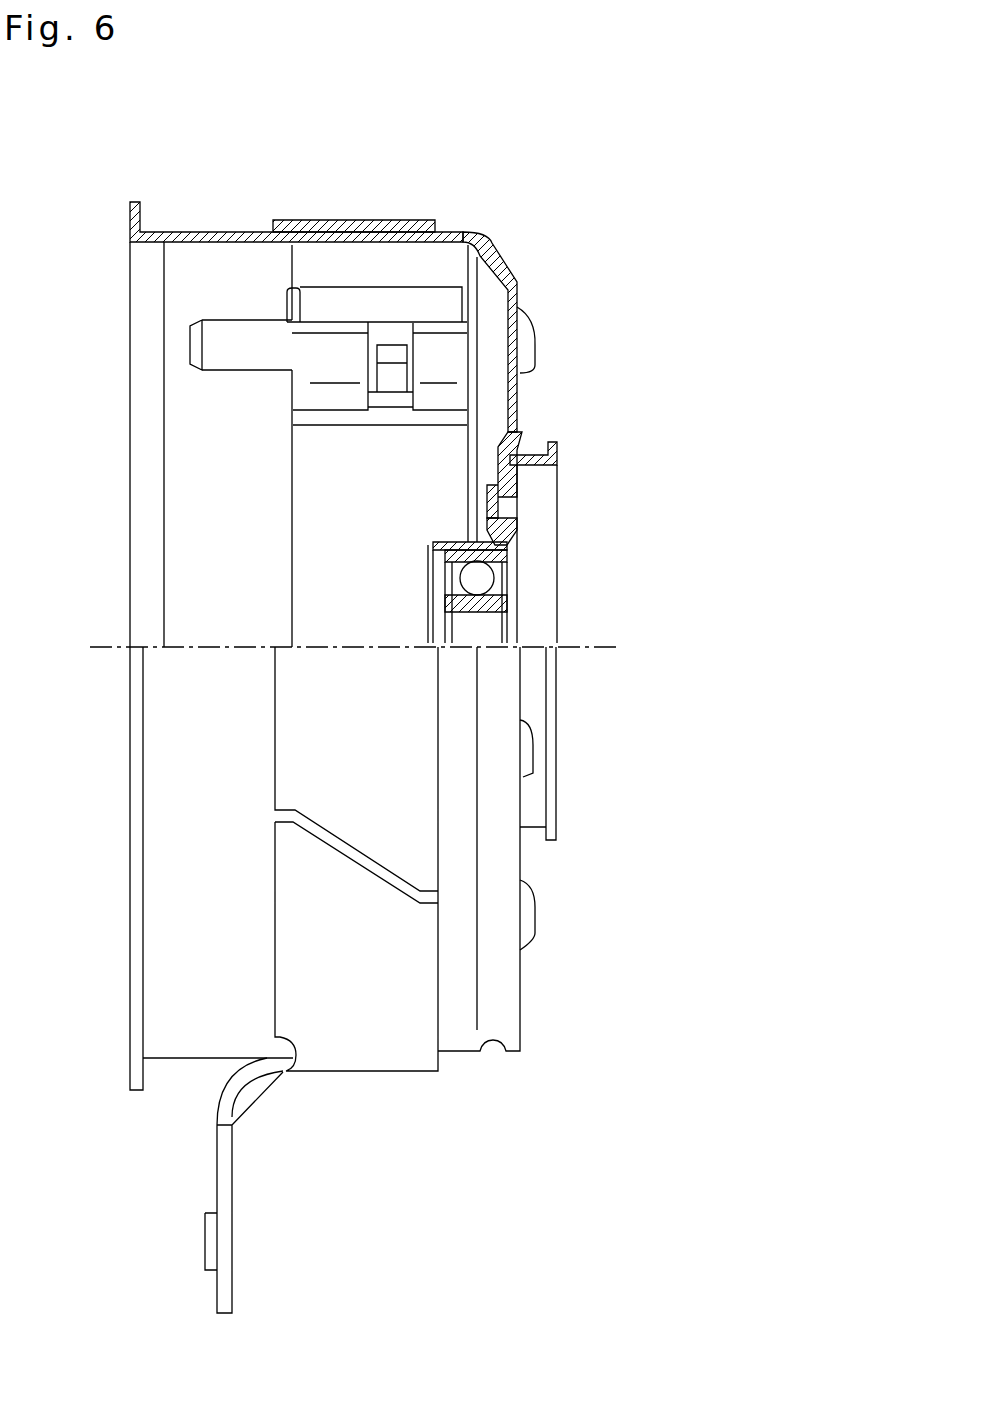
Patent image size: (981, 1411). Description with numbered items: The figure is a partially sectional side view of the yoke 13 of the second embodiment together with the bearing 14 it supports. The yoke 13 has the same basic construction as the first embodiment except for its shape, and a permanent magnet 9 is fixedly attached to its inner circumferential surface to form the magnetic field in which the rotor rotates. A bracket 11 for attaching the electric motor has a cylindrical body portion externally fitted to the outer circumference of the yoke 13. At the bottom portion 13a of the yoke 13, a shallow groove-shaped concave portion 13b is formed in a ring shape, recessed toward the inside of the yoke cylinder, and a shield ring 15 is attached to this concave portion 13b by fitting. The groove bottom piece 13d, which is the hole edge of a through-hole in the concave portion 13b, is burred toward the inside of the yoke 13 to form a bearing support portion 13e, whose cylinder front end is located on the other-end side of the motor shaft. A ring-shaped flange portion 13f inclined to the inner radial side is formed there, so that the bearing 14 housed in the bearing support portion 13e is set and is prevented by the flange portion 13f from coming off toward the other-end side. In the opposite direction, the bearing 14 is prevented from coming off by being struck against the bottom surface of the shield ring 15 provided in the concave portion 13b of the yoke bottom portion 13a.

The permanent magnet 9 is at (325, 268).
The bracket 11 is at (390, 213).
The yoke 13 is at (213, 223).
The bottom portion 13a is at (517, 303).
The concave portion 13b is at (517, 478).
The groove bottom piece 13d is at (513, 522).
The bearing support portion 13e is at (467, 542).
The flange portion 13f is at (428, 545).
The bearing 14 is at (507, 598).
The shield ring 15 is at (560, 449).